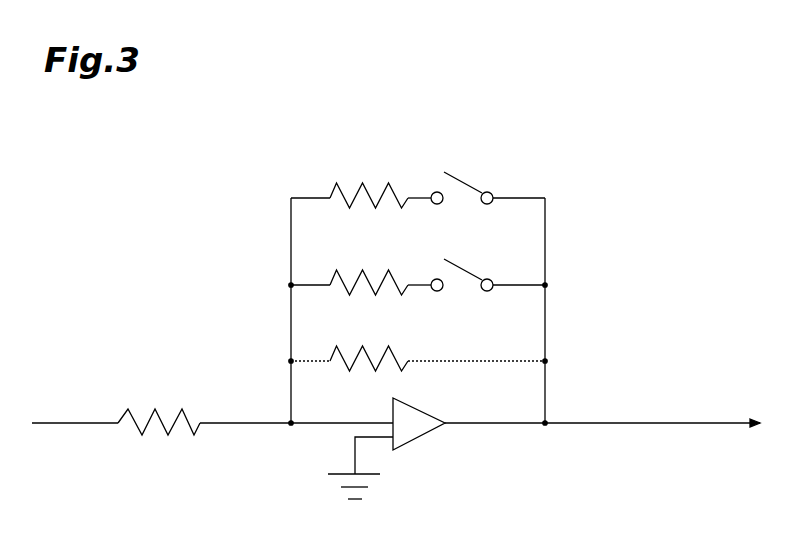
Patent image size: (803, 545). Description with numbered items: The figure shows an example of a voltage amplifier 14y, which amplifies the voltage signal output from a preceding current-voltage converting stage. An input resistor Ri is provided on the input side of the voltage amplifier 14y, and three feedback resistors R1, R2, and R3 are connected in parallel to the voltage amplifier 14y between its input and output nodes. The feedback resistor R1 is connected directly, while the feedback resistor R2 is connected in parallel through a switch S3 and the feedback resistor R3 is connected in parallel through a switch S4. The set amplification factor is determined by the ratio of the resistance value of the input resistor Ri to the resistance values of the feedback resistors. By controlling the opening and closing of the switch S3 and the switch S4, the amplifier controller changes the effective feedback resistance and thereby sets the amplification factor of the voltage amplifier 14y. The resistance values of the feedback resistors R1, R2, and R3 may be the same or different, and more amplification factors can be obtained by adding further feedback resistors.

The feedback resistor R1 is at (345, 363).
The feedback resistor R2 is at (345, 283).
The feedback resistor R3 is at (345, 195).
The switch S3 is at (471, 273).
The switch S4 is at (471, 186).
The input resistor Ri is at (168, 432).
The voltage amplifier 14y is at (424, 436).